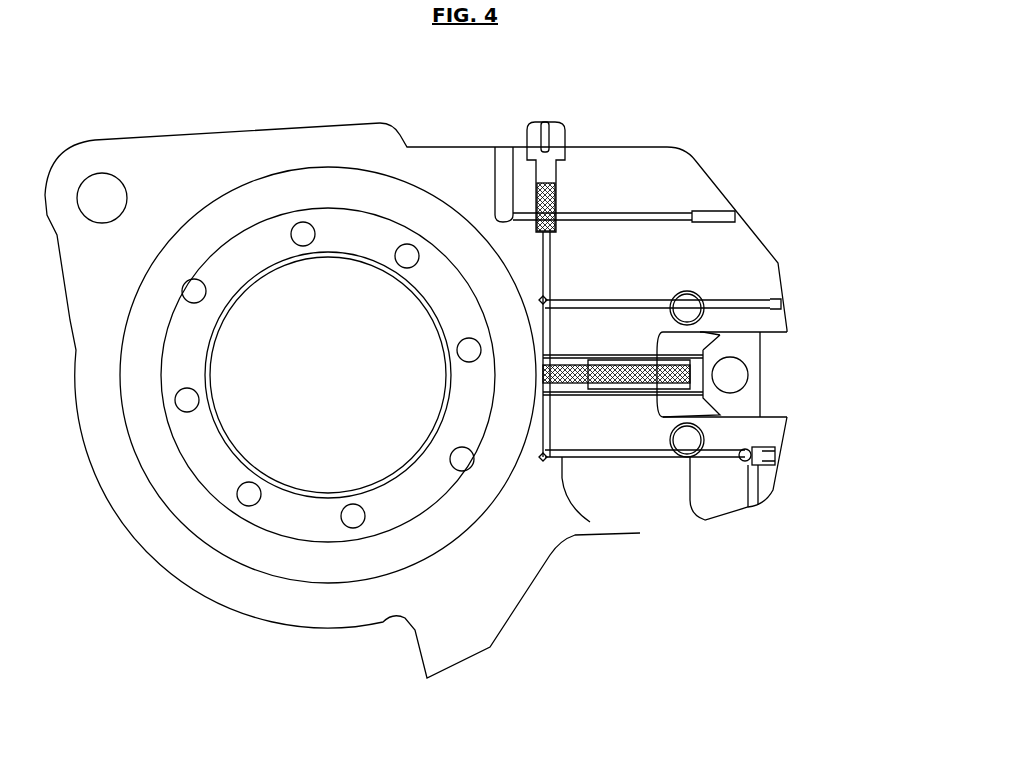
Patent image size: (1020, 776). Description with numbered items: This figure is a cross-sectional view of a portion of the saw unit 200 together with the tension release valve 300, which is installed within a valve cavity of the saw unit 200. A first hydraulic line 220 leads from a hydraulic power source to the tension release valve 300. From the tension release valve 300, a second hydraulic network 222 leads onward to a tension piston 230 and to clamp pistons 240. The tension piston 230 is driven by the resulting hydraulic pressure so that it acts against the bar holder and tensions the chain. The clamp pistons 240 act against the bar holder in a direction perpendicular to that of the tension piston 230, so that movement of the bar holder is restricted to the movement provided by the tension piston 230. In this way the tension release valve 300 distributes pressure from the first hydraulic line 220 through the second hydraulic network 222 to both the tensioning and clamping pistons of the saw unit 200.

The saw unit 200 is at (173, 600).
The first hydraulic line 220 is at (503, 163).
The second hydraulic network 222 is at (562, 460).
The tension piston 230 is at (692, 374).
The clamp pistons 240 is at (690, 292).
The tension release valve 300 is at (565, 112).